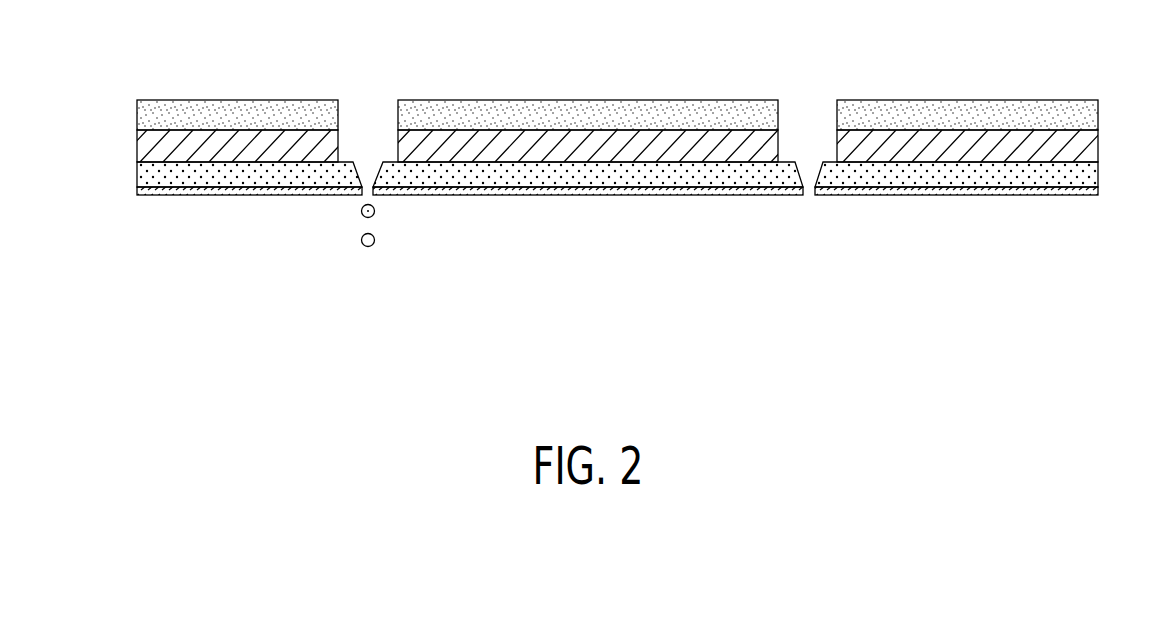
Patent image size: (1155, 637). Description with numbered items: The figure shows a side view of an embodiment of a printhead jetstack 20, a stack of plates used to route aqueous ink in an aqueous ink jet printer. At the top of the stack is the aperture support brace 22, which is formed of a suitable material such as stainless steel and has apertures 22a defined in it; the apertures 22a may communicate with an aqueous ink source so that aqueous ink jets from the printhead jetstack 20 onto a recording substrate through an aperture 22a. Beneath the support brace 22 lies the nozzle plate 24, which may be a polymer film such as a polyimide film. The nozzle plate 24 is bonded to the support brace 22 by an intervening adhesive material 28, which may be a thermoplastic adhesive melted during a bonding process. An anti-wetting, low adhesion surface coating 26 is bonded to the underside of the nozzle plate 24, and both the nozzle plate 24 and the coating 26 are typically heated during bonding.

The printhead jetstack 20 is at (593, 136).
The aperture support brace 22 is at (142, 118).
The aperture 22a is at (369, 107).
The nozzle plate 24 is at (143, 172).
The anti-wetting low adhesion surface coating 26 is at (174, 194).
The adhesive material 28 is at (143, 135).